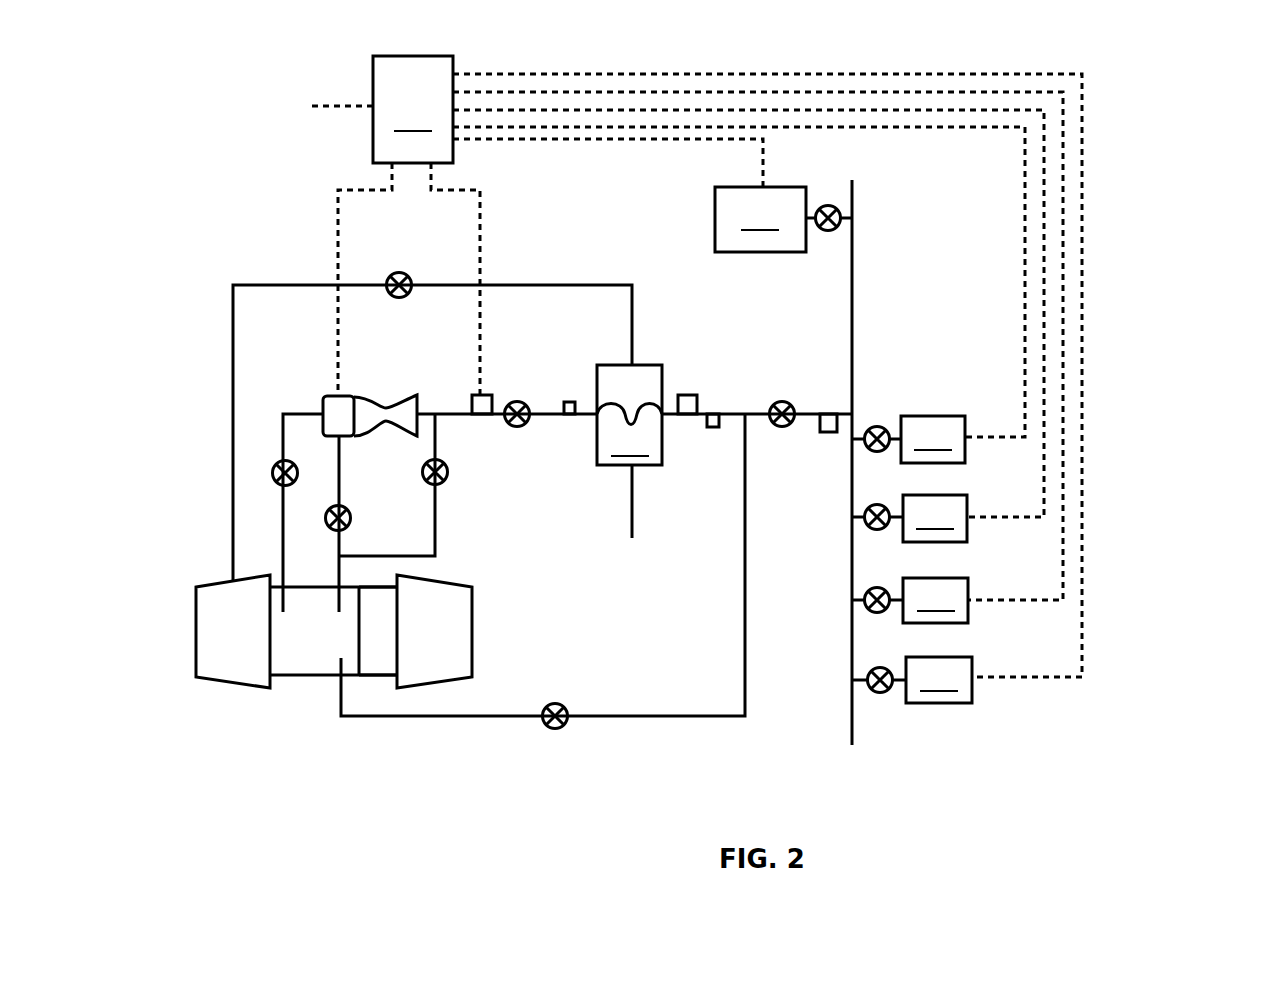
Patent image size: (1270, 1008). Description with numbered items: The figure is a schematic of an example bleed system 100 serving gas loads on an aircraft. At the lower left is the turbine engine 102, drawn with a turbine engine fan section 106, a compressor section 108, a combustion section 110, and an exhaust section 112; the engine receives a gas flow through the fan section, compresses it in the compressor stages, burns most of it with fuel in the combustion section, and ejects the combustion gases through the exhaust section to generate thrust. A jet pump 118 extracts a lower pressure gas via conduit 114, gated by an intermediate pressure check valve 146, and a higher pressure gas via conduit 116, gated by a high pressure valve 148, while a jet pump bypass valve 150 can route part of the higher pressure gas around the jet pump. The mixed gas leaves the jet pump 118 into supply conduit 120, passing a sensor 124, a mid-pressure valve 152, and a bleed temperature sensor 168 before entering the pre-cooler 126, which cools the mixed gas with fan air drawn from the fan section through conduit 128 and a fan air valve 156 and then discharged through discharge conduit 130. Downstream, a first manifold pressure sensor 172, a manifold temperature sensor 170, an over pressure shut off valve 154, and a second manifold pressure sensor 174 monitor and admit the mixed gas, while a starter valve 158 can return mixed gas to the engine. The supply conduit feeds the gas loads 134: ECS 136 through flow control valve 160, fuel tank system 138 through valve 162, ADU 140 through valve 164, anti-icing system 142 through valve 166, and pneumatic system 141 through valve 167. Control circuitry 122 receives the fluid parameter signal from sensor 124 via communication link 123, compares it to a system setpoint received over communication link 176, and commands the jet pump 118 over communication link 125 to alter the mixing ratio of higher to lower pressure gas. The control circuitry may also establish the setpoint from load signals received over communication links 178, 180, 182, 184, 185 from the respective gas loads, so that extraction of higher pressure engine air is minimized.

The bleed system 100 is at (172, 332).
The turbine engine 102 is at (267, 753).
The turbine engine fan section 106 is at (238, 649).
The compressor section 108 is at (293, 680).
The combustion section 110 is at (377, 667).
The exhaust section 112 is at (453, 640).
The conduit 114 is at (303, 415).
The conduit 116 is at (340, 453).
The jet pump 118 is at (320, 397).
The supply conduit 120 is at (452, 417).
The control circuitry 122 is at (413, 109).
The communication link 123 is at (480, 228).
The sensor 124 is at (492, 397).
The communication link 125 is at (338, 228).
The pre-cooler 126 is at (629, 415).
The conduit 128 is at (233, 405).
The discharge conduit 130 is at (633, 518).
The gas loads 134 is at (1165, 323).
The ECS 136 is at (783, 219).
The fuel tank system 138 is at (908, 439).
The ADU 140 is at (909, 518).
The pneumatic system 141 is at (912, 680).
The anti-icing system 142 is at (910, 600).
The intermediate pressure check valve 146 is at (275, 465).
The high pressure valve 148 is at (327, 518).
The jet pump bypass valve 150 is at (450, 473).
The mid-pressure valve 152 is at (520, 427).
The over pressure shut off valve 154 is at (777, 405).
The fan air valve 156 is at (405, 275).
The starter valve 158 is at (562, 727).
The flow control valve 160 is at (828, 232).
The valve 162 is at (883, 428).
The valve 164 is at (883, 506).
The valve 166 is at (883, 588).
The valve 167 is at (886, 668).
The bleed temperature sensor 168 is at (569, 400).
The manifold temperature sensor 170 is at (714, 428).
The first manifold pressure sensor 172 is at (687, 393).
The second manifold pressure sensor 174 is at (828, 433).
The communication link 176 is at (350, 107).
The communication link 178 is at (560, 140).
The communication link 180 is at (1025, 303).
The communication link 182 is at (1044, 350).
The communication link 184 is at (1063, 300).
The communication link 185 is at (1082, 435).